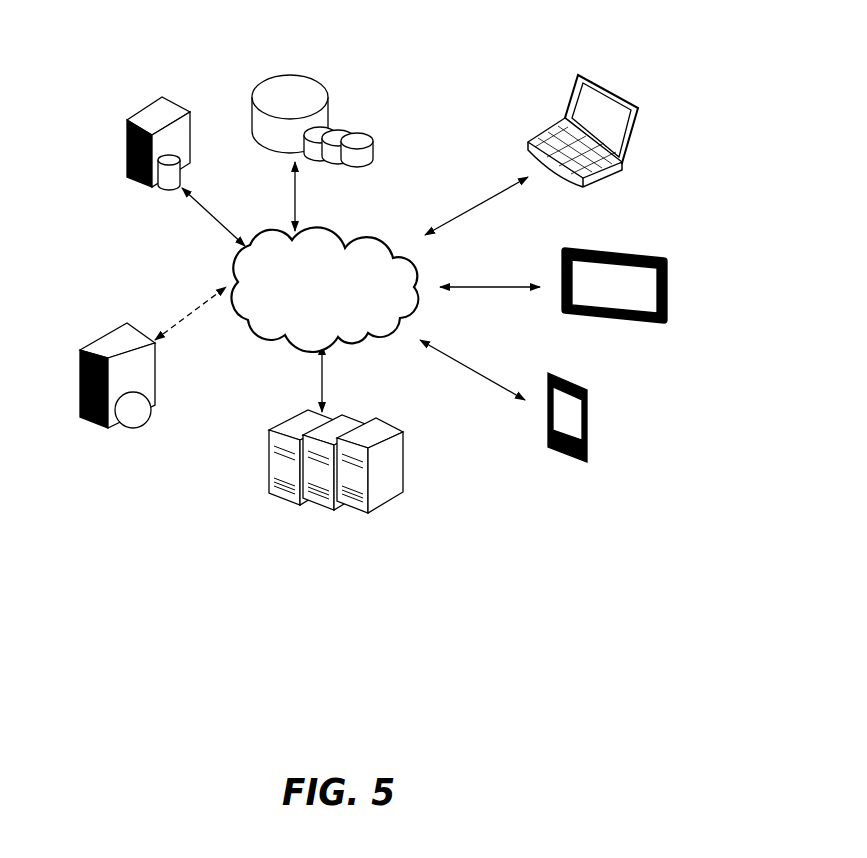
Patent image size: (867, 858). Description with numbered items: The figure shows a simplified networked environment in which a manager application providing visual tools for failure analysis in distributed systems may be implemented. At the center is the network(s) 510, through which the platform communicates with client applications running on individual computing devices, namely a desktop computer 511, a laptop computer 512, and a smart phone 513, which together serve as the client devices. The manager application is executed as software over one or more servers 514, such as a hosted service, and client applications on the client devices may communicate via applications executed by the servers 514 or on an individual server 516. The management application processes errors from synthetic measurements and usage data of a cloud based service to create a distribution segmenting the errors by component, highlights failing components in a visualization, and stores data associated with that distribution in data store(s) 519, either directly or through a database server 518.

The network(s) 510 is at (325, 223).
The desktop computer 511 is at (612, 75).
The laptop computer 512 is at (642, 238).
The smart phone 513 is at (593, 390).
The servers 514 is at (290, 418).
The individual server 516 is at (97, 335).
The database server 518 is at (158, 196).
The data store(s) 519 is at (302, 57).